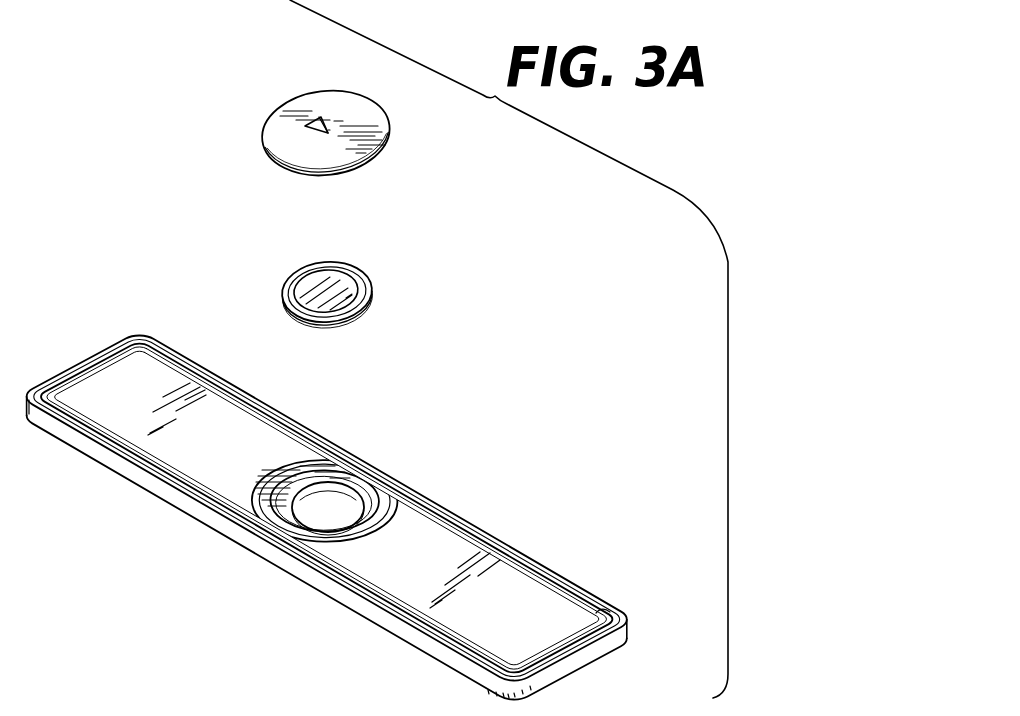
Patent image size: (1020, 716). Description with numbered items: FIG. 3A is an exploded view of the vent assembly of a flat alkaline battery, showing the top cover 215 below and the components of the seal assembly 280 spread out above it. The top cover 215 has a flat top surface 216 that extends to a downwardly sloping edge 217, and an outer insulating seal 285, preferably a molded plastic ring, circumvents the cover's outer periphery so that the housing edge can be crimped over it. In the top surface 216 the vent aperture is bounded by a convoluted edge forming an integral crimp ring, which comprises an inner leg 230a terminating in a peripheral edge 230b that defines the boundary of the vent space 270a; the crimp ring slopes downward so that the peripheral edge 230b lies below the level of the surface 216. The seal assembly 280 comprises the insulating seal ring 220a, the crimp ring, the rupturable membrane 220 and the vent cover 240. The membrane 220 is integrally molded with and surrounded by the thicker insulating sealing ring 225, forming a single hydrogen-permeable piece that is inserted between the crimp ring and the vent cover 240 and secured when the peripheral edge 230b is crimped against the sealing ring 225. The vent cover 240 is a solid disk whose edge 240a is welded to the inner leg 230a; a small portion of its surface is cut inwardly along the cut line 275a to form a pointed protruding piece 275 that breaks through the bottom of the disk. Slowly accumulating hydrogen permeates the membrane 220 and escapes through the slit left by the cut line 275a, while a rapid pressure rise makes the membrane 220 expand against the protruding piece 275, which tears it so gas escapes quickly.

The top cover 215 is at (472, 553).
The top surface 216 is at (415, 527).
The downwardly sloping edge 217 is at (601, 623).
The rupturable membrane 220 is at (340, 282).
The insulating seal ring 220a is at (291, 266).
The insulating sealing ring 225 is at (353, 313).
The inner leg 230a is at (256, 497).
The peripheral edge 230b is at (285, 528).
The vent cover 240 is at (388, 124).
The edge 240a is at (278, 111).
The vent space 270a is at (330, 518).
The pointed protruding piece 275 is at (303, 127).
The cut line 275a is at (319, 131).
The seal assembly 280 is at (203, 92).
The outer insulating seal 285 is at (621, 630).